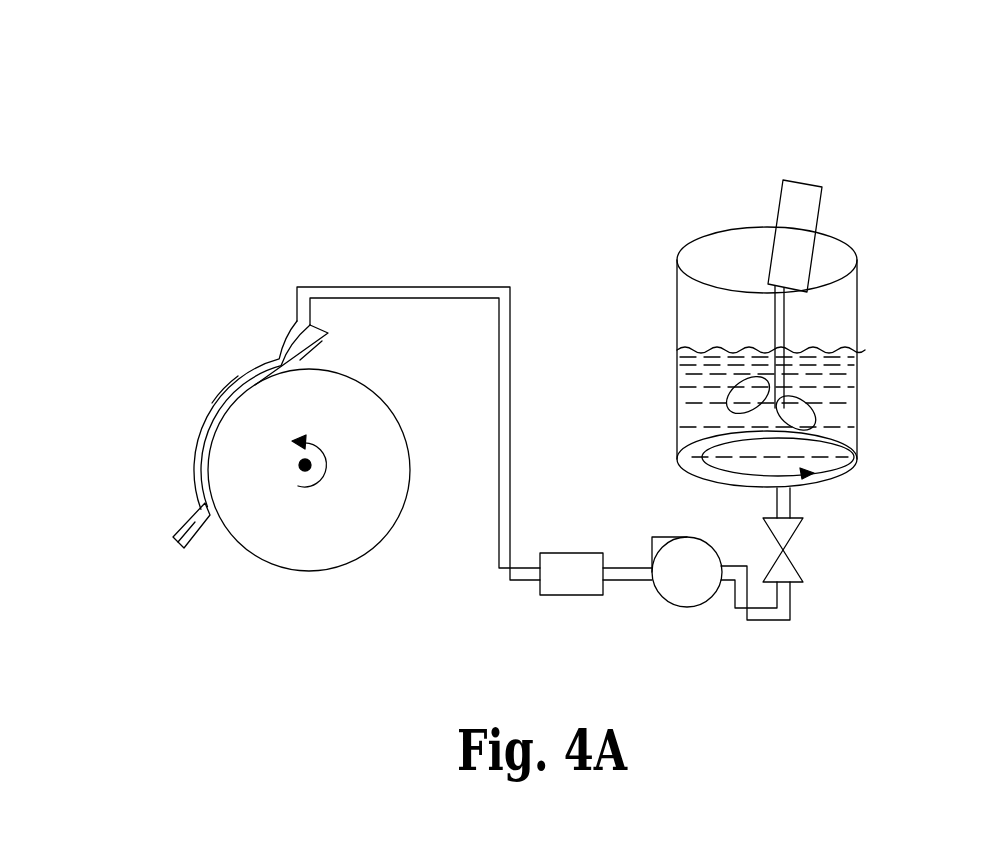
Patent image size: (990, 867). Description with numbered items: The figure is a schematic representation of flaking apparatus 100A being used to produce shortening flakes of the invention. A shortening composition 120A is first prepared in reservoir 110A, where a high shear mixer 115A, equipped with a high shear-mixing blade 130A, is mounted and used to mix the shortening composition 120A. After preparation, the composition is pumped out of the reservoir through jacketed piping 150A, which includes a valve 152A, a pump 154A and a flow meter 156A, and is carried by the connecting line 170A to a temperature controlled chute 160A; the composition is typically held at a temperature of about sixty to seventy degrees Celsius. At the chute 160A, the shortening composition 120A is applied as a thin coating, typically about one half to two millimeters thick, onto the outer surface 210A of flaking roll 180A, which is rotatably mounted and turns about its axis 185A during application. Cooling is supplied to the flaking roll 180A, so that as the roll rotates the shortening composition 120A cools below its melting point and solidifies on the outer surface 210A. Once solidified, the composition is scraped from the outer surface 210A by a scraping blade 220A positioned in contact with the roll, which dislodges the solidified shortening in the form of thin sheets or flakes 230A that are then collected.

The apparatus 100A is at (608, 104).
The reservoir 110A is at (652, 279).
The high shear mixer 115A is at (792, 182).
The shortening composition 120A is at (862, 420).
The high shear-mixing blade 130A is at (858, 352).
The jacketed piping 150A is at (762, 622).
The valve 152A is at (786, 552).
The pump 154A is at (680, 609).
The flow meter 156A is at (568, 553).
The temperature controlled chute 160A is at (328, 338).
The supply conduit 170A is at (398, 287).
The flaking roll 180A is at (360, 569).
The axis 185A is at (300, 461).
The outer surface 210A is at (212, 405).
The scraping blade 220A is at (183, 548).
The flakes 230A is at (172, 536).